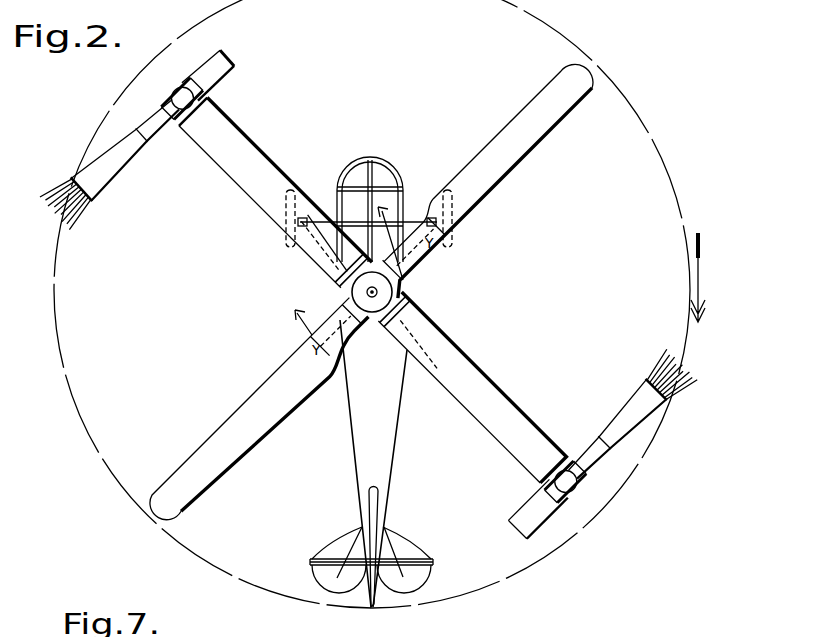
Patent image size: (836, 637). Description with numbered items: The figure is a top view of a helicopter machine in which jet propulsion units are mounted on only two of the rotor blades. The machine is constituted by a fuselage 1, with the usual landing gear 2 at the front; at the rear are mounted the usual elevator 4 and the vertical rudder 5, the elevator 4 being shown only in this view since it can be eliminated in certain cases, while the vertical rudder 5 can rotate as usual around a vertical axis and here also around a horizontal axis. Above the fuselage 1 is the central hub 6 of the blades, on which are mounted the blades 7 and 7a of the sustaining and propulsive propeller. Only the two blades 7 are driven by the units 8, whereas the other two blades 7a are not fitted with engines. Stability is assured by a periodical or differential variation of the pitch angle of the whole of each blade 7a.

The fuselage 1 is at (383, 433).
The landing gear 2 is at (336, 232).
The elevator 4 is at (344, 585).
The vertical rudder 5 is at (370, 503).
The central hub 6 is at (400, 288).
The blades 7 is at (252, 155).
The blades 7a is at (515, 153).
The units 8 is at (170, 93).